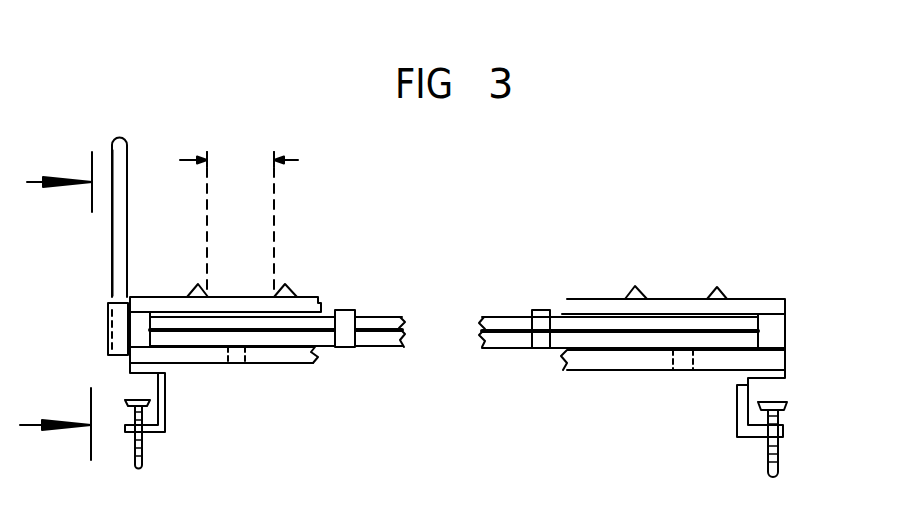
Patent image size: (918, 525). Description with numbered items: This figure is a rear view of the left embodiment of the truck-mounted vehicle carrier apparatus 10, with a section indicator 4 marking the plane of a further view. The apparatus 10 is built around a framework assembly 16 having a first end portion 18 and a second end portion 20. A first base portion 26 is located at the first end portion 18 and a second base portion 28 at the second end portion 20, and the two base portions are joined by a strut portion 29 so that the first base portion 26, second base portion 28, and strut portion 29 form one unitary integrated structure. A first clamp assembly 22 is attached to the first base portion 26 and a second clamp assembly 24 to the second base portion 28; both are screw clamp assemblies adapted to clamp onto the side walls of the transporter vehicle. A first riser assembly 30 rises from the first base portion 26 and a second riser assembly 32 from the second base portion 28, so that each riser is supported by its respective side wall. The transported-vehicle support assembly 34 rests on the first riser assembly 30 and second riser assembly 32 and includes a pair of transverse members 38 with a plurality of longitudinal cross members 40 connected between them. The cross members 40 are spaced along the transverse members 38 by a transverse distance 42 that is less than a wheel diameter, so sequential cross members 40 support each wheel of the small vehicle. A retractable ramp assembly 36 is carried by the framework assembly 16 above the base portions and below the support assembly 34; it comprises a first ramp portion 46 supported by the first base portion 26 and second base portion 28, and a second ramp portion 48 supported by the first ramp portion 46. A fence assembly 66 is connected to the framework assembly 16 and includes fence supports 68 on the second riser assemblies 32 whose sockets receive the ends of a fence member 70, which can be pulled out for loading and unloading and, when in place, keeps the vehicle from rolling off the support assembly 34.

The section line 4- 4 is at (56, 306).
The truck-mounted vehicle carrier apparatus 10 is at (235, 105).
The framework assembly 16 is at (795, 332).
The first end portion 18 is at (720, 373).
The second end portion 20 is at (182, 383).
The first clamp assembly 22 is at (790, 410).
The second clamp assembly 24 is at (127, 437).
The first base portion 26 is at (772, 362).
The second base portion 28 is at (140, 365).
The strut portion 29 is at (305, 365).
The first riser assembly 30 is at (773, 327).
The second riser assembly 32 is at (137, 323).
The transported-vehicle support assembly 34 is at (318, 304).
The retractable ramp assembly 36 is at (495, 355).
The transverse members 38 is at (238, 298).
The longitudinal cross members 40 is at (287, 291).
The transverse distance 42 is at (262, 219).
The first ramp portion 46 is at (390, 340).
The second ramp portion 48 is at (388, 320).
The fence assembly 66 is at (102, 281).
The fence supports 68 is at (114, 330).
The fence member 70 is at (118, 133).